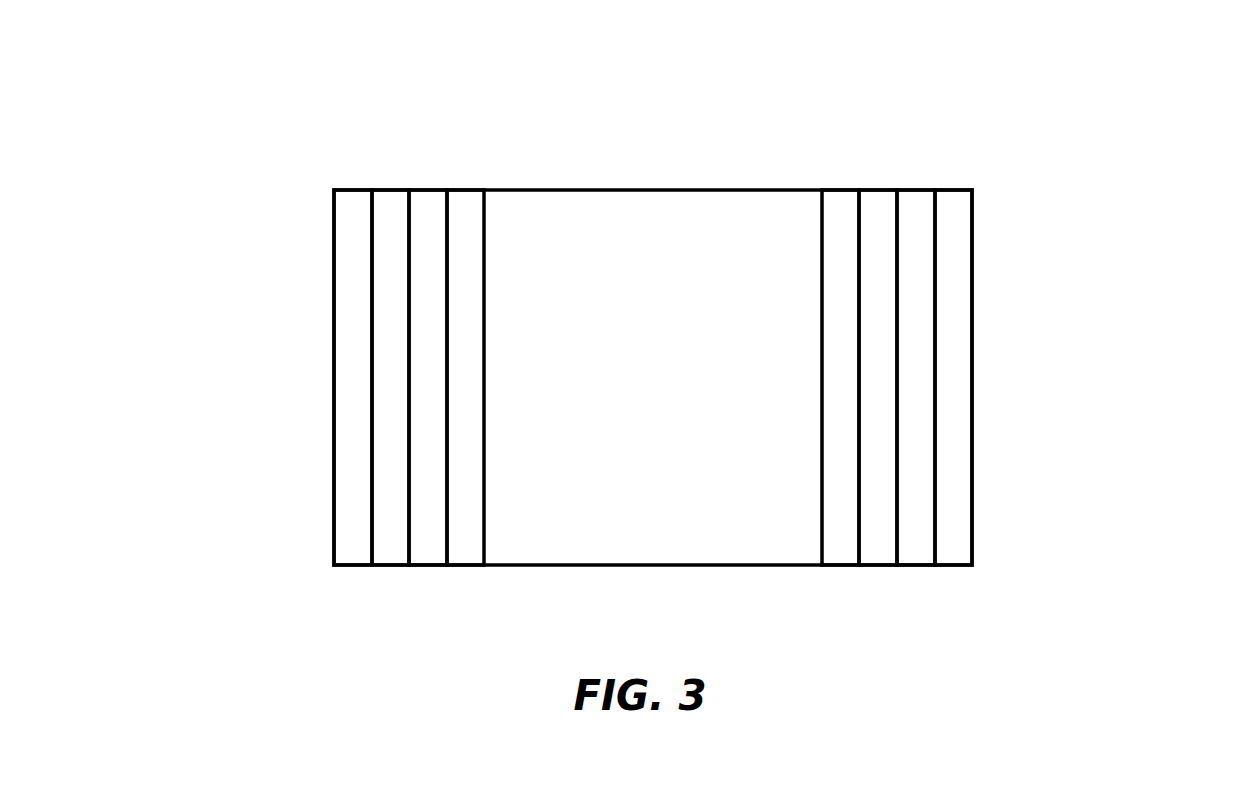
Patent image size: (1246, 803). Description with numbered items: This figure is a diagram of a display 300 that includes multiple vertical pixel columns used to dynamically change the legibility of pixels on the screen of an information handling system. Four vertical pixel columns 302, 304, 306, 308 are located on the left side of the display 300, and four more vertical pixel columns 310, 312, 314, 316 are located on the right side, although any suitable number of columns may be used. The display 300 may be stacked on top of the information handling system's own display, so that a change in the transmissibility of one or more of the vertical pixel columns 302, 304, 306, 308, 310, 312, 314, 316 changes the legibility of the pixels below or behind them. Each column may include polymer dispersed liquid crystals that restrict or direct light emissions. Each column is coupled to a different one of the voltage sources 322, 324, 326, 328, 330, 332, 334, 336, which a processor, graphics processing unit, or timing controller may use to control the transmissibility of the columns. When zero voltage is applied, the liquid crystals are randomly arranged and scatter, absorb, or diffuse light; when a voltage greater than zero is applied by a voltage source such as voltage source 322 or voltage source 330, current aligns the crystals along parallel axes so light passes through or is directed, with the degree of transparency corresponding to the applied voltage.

The display 300 is at (717, 225).
The vertical pixel column 302 is at (341, 361).
The vertical pixel column 304 is at (378, 361).
The vertical pixel column 306 is at (416, 361).
The vertical pixel column 308 is at (454, 361).
The vertical pixel column 310 is at (828, 361).
The vertical pixel column 312 is at (866, 361).
The vertical pixel column 314 is at (904, 361).
The vertical pixel column 316 is at (942, 361).
The voltage source 322 is at (213, 166).
The voltage source 324 is at (258, 147).
The voltage source 326 is at (298, 128).
The voltage source 328 is at (335, 109).
The voltage source 330 is at (971, 109).
The voltage source 332 is at (1008, 128).
The voltage source 334 is at (1047, 147).
The voltage source 336 is at (1092, 166).